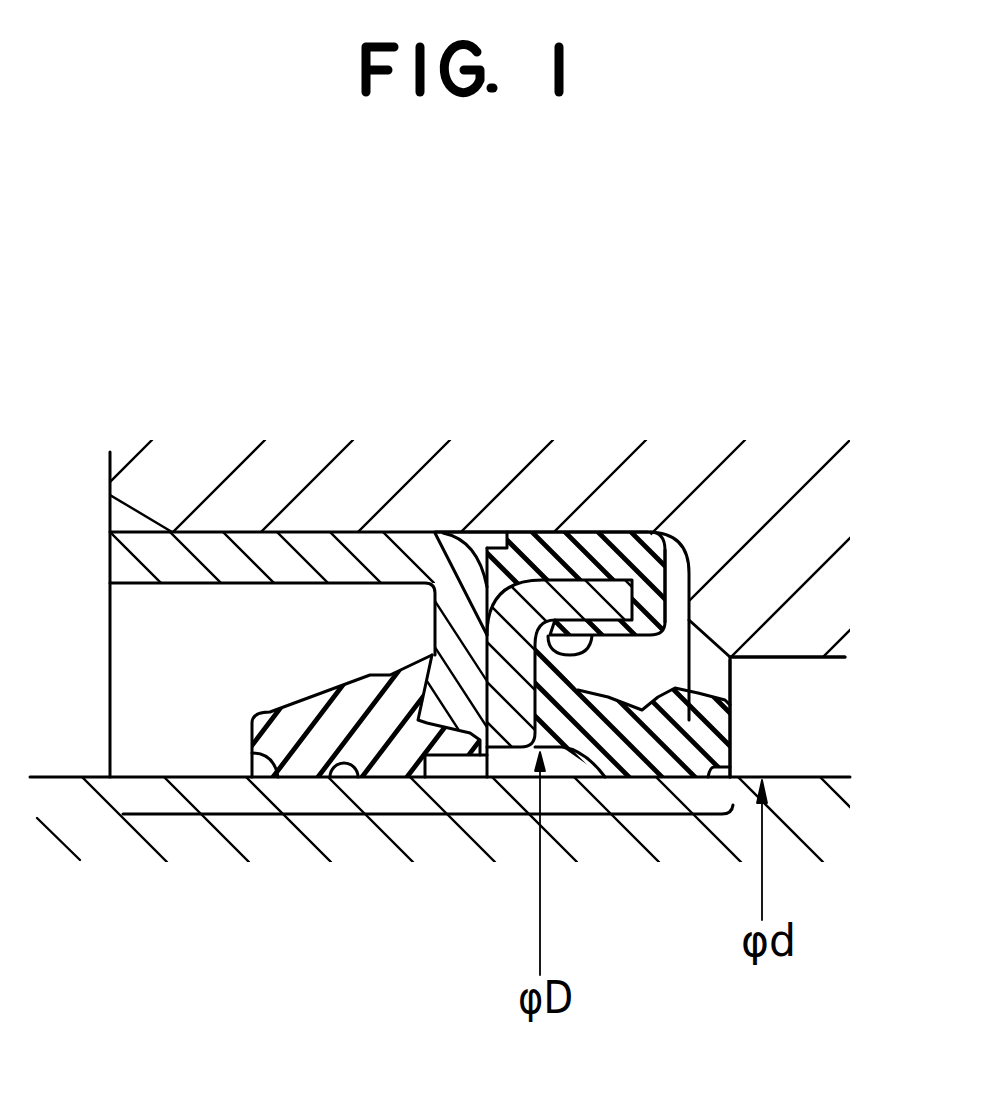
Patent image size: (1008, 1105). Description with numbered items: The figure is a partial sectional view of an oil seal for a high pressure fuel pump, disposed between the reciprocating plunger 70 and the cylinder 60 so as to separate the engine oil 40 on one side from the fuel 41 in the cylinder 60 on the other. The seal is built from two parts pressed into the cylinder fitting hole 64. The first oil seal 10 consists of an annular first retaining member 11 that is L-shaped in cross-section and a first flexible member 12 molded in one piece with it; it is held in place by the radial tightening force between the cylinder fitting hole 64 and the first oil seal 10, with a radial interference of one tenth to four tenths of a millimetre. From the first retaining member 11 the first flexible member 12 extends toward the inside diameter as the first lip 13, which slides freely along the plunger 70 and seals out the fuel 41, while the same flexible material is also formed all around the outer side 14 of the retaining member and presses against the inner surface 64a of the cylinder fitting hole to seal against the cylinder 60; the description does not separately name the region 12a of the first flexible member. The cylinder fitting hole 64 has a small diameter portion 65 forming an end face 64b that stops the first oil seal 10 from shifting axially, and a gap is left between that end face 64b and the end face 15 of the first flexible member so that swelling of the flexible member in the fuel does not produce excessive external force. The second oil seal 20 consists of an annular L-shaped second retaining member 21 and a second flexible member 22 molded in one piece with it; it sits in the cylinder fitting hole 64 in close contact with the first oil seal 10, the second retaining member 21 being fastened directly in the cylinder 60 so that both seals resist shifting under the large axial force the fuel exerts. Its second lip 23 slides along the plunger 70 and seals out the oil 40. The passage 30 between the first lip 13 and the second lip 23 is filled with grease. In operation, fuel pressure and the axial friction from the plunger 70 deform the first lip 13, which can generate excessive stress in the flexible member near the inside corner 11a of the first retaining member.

The first oil seal 10 is at (570, 633).
The first retaining member 11 is at (593, 587).
The inside corner of the first retaining member 11a is at (578, 688).
The first flexible member 12 is at (657, 595).
The inner end portion 12a is at (500, 778).
The first lip 13 is at (655, 703).
The outer side of the retaining member 14 is at (550, 532).
The end face of the first flexible member 15 is at (676, 566).
The second oil seal 20 is at (333, 860).
The second retaining member 21 is at (130, 565).
The second flexible member 22 is at (403, 693).
The second lip 23 is at (330, 730).
The passage 30 is at (458, 780).
The oil 40 is at (157, 653).
The fuel 41 is at (777, 758).
The cylinder 60 is at (493, 447).
The cylinder fitting hole 64 is at (468, 528).
The inner surface of the cylinder fitting hole 64a is at (556, 538).
The end face of the cylinder fitting hole 64b is at (707, 570).
The small diameter portion 65 is at (800, 657).
The plunger 70 is at (380, 862).